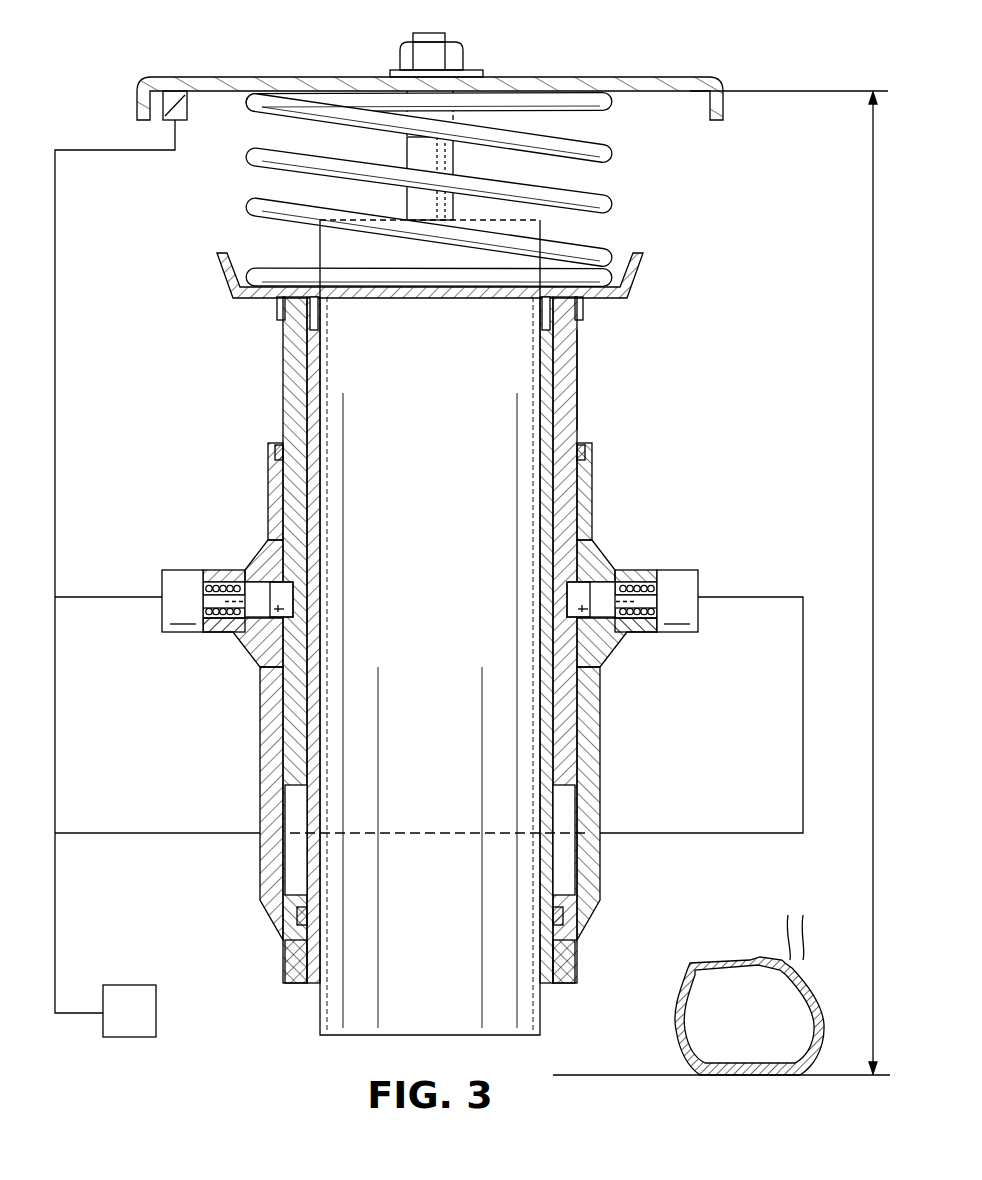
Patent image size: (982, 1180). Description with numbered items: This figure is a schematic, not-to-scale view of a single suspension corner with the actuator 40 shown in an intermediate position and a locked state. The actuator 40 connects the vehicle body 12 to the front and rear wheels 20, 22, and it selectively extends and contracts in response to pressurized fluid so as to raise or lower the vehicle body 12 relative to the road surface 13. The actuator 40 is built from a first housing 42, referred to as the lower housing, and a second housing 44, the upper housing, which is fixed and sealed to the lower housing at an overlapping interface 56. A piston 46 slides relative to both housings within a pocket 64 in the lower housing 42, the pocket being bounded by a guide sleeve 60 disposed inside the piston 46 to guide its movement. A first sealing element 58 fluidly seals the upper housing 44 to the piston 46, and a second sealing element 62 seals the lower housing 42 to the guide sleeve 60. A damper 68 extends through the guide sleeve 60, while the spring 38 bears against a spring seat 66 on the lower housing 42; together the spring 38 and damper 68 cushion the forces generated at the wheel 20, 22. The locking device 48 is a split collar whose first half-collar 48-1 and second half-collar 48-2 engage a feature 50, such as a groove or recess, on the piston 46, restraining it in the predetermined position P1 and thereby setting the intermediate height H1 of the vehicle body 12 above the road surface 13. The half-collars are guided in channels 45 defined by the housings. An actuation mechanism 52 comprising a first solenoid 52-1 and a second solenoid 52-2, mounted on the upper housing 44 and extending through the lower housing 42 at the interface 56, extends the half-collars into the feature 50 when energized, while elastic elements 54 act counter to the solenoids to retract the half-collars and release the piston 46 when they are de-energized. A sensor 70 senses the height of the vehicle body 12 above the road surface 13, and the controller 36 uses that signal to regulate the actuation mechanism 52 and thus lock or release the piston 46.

The vehicle body 12 is at (236, 79).
The road surface 13 is at (611, 1084).
The front wheel 20 is at (727, 962).
The rear wheel 22 is at (789, 916).
The controller 36 is at (129, 1011).
The spring 38 is at (246, 158).
The actuator 40 is at (406, 627).
The first housing 42 is at (273, 910).
The second housing 44 is at (592, 492).
The channels 45 is at (281, 572).
The piston 46 is at (566, 426).
The locking device 48 is at (300, 570).
The first half-collar 48-1 is at (287, 615).
The second half-collar 48-2 is at (600, 650).
The feature 50 is at (283, 600).
The actuation mechanism 52 is at (158, 621).
The first solenoid 52-1 is at (182, 572).
The second solenoid 52-2 is at (678, 572).
The elastic element 54 is at (229, 583).
The overlapping interface 56 is at (221, 630).
The first sealing element 58 is at (278, 455).
The guide sleeve 60 is at (312, 968).
The second sealing element 62 is at (563, 915).
The pocket 64 is at (566, 845).
The spring seat 66 is at (632, 278).
The damper 68 is at (440, 627).
The sensor 70 is at (176, 103).
The predetermined position P1 is at (582, 380).
The intermediate height H1 is at (789, 582).